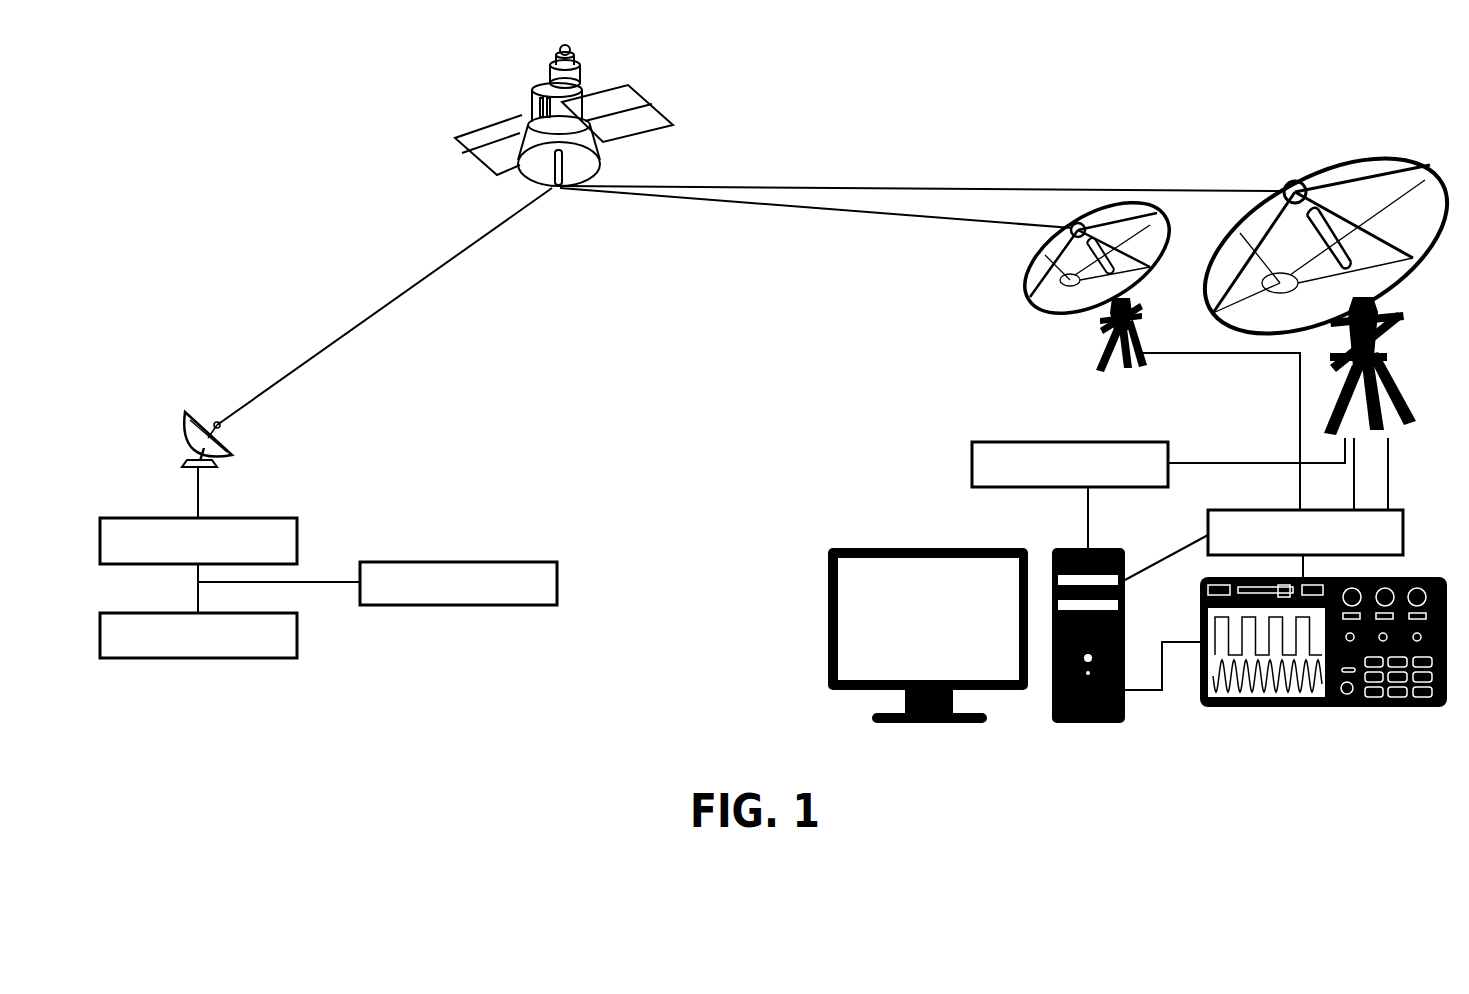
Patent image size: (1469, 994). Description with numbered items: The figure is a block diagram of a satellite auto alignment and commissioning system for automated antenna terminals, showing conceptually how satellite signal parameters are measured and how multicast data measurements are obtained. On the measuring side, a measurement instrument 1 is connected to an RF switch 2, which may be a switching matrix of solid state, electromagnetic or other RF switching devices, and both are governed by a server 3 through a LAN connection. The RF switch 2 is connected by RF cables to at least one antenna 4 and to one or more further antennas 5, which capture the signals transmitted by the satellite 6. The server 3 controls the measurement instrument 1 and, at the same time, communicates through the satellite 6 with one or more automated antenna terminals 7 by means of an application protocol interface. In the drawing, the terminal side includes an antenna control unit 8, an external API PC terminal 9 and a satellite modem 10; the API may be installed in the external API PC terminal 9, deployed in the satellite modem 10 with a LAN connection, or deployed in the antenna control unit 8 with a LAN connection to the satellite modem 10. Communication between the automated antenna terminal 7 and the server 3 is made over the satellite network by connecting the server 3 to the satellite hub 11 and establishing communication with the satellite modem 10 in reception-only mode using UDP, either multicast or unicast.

The measurement instrument 1 is at (1334, 642).
The RF switch 2 is at (1305, 532).
The server 3 is at (928, 635).
The antenna 4 is at (1323, 278).
The antennas 5 is at (1096, 276).
The satellite 6 is at (564, 115).
The automated antenna terminal 7 is at (190, 439).
The antenna control unit 8 is at (198, 541).
The external API PC terminal 9 is at (458, 583).
The satellite modem 10 is at (198, 635).
The satellite hub 11 is at (1070, 464).